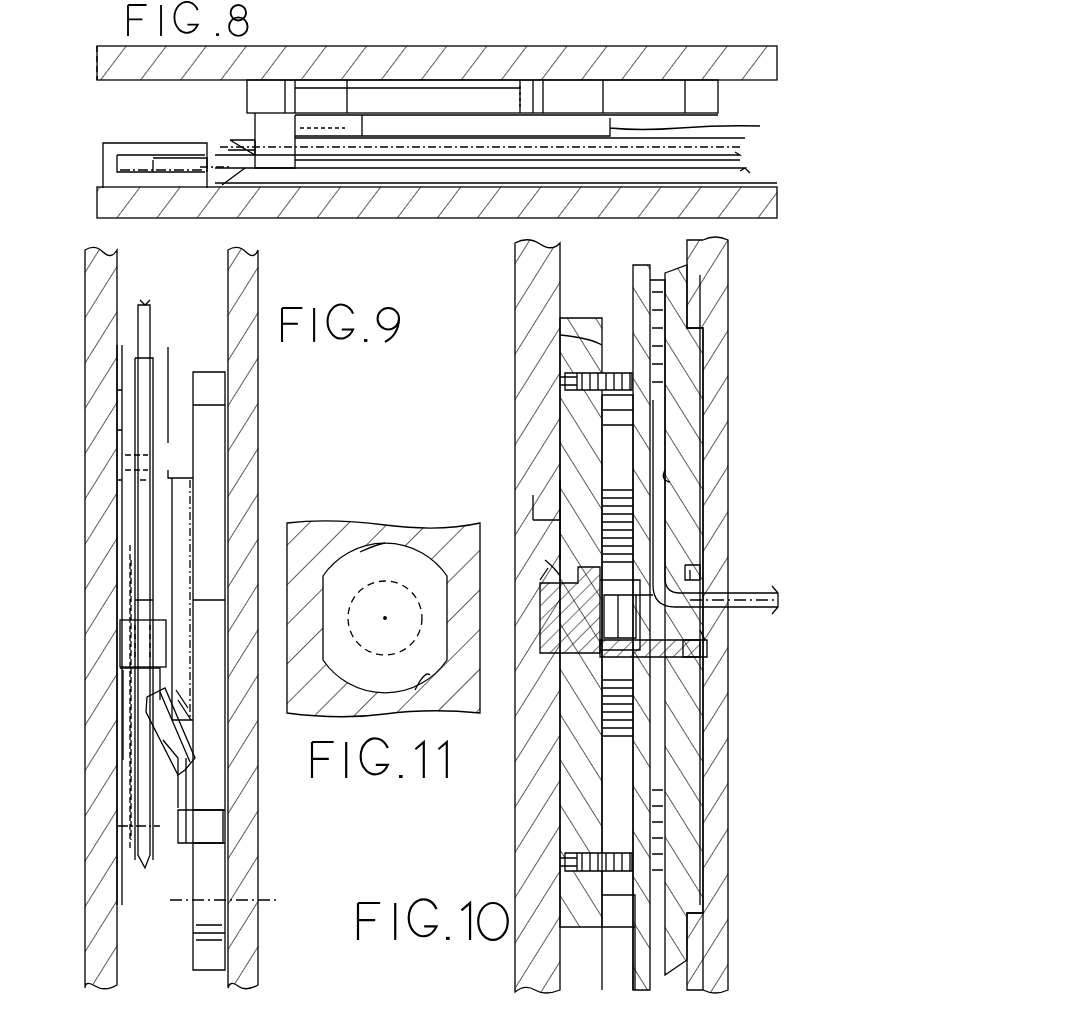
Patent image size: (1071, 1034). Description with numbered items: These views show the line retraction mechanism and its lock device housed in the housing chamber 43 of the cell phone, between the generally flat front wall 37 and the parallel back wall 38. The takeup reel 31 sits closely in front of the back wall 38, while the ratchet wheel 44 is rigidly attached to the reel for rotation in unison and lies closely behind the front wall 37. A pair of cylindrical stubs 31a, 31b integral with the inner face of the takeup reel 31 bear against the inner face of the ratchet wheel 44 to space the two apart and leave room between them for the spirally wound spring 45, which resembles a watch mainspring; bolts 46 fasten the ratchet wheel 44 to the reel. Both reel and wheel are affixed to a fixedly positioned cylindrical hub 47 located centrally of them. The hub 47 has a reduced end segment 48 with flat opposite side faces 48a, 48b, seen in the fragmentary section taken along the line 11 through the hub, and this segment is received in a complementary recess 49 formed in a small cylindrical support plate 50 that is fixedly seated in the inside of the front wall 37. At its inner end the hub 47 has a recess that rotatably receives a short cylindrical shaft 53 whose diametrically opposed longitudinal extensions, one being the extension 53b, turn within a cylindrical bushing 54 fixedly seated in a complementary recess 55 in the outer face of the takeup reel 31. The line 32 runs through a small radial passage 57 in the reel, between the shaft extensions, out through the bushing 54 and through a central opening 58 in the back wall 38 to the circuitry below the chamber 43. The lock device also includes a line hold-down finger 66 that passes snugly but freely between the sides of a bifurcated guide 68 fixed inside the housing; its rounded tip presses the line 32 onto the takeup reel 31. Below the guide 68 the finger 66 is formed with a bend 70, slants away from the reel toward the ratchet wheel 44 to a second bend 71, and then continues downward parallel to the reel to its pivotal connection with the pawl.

In FIG. 10, the section line 11- 11 is at (575, 506).
In FIG. 8, the takeup reel 31 is at (745, 172).
In FIG. 9, the takeup reel 31 is at (157, 357).
In FIG. 10, the takeup reel 31 is at (680, 355).
In FIG. 10, the cylindrical stub 31a is at (560, 340).
In FIG. 10, the cylindrical stub 31b is at (620, 895).
In FIG. 8, the line 32 is at (742, 155).
In FIG. 9, the line 32 is at (148, 318).
In FIG. 10, the line 32 is at (665, 848).
In FIG. 8, the front wall 37 is at (398, 50).
In FIG. 9, the front wall 37 is at (258, 500).
In FIG. 10, the front wall 37 is at (512, 300).
In FIG. 8, the back wall 38 is at (420, 214).
In FIG. 9, the back wall 38 is at (90, 582).
In FIG. 10, the back wall 38 is at (728, 350).
In FIG. 8, the housing chamber 43 is at (118, 100).
In FIG. 9, the housing chamber 43 is at (145, 895).
In FIG. 10, the housing chamber 43 is at (600, 290).
In FIG. 8, the ratchet wheel 44 is at (718, 97).
In FIG. 9, the ratchet wheel 44 is at (215, 438).
In FIG. 10, the ratchet wheel 44 is at (578, 320).
In FIG. 8, the spirally wound spring 45 is at (524, 136).
In FIG. 9, the spirally wound spring 45 is at (180, 533).
In FIG. 11, the spirally wound spring 45 is at (322, 600).
In FIG. 10, the spirally wound spring 45 is at (618, 740).
In FIG. 10, the bolts 46 is at (560, 380).
In FIG. 10, the cylindrical hub 47 is at (562, 492).
In FIG. 11, the reduced end segment 48 is at (390, 556).
In FIG. 10, the reduced end segment 48 is at (548, 630).
In FIG. 11, the flat side face 48a is at (372, 548).
In FIG. 11, the flat side face 48b is at (480, 590).
In FIG. 11, the recess 49 is at (425, 690).
In FIG. 10, the recess 49 is at (548, 565).
In FIG. 11, the support plate 50 is at (462, 700).
In FIG. 10, the cylindrical shaft 53 is at (628, 612).
In FIG. 10, the longitudinal extension 53b is at (700, 655).
In FIG. 10, the cylindrical bushing 54 is at (700, 577).
In FIG. 10, the recess 55 is at (700, 568).
In FIG. 10, the radial passage 57 is at (668, 480).
In FIG. 10, the central opening 58 is at (740, 625).
In FIG. 8, the line hold-down finger 66 is at (207, 162).
In FIG. 9, the line hold-down finger 66 is at (140, 445).
In FIG. 8, the bifurcated guide 68 is at (113, 143).
In FIG. 9, the bifurcated guide 68 is at (125, 642).
In FIG. 9, the bend 70 is at (150, 698).
In FIG. 9, the bend 71 is at (192, 760).